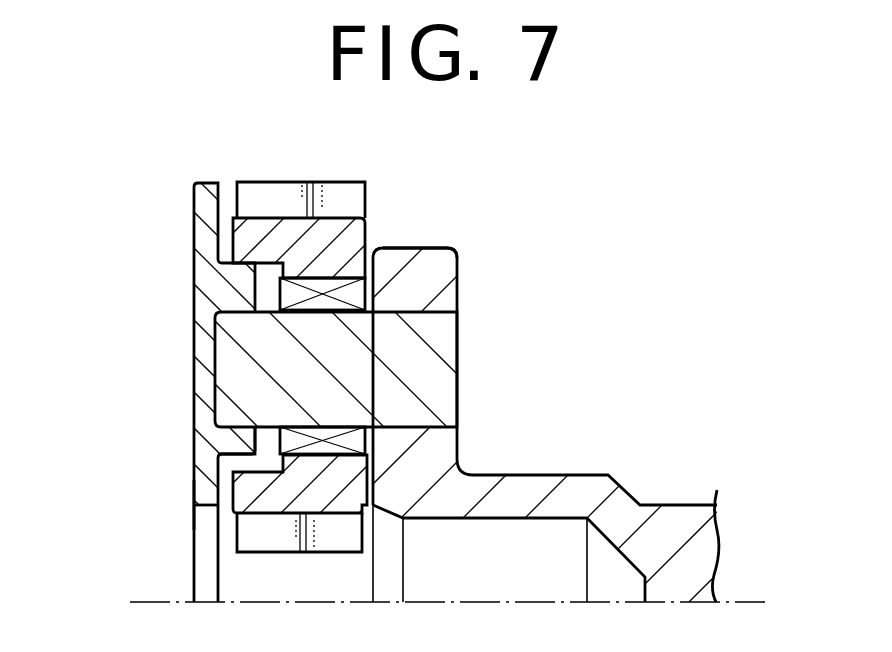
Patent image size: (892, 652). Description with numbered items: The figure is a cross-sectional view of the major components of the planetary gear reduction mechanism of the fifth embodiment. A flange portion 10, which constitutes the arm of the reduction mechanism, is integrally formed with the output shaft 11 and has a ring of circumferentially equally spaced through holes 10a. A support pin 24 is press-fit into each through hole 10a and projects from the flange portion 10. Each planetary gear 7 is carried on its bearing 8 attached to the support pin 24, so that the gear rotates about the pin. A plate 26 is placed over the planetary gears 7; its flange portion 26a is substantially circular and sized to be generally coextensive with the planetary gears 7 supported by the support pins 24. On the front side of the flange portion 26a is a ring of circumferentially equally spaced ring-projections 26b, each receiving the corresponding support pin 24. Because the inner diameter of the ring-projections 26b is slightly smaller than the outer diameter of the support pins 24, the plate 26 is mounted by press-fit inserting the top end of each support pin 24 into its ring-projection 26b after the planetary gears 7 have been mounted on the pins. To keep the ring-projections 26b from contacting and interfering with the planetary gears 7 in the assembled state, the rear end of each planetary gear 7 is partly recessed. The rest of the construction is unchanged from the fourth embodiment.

The planetary gear 7 is at (270, 507).
The bearing 8 is at (285, 447).
The flange portion 10 is at (440, 268).
The through hole 10a is at (418, 323).
The output shaft 11 is at (692, 555).
The support pin 24 is at (443, 343).
The plate 26 is at (193, 262).
The flange portion 26a is at (205, 484).
The ring-projection 26b is at (247, 437).